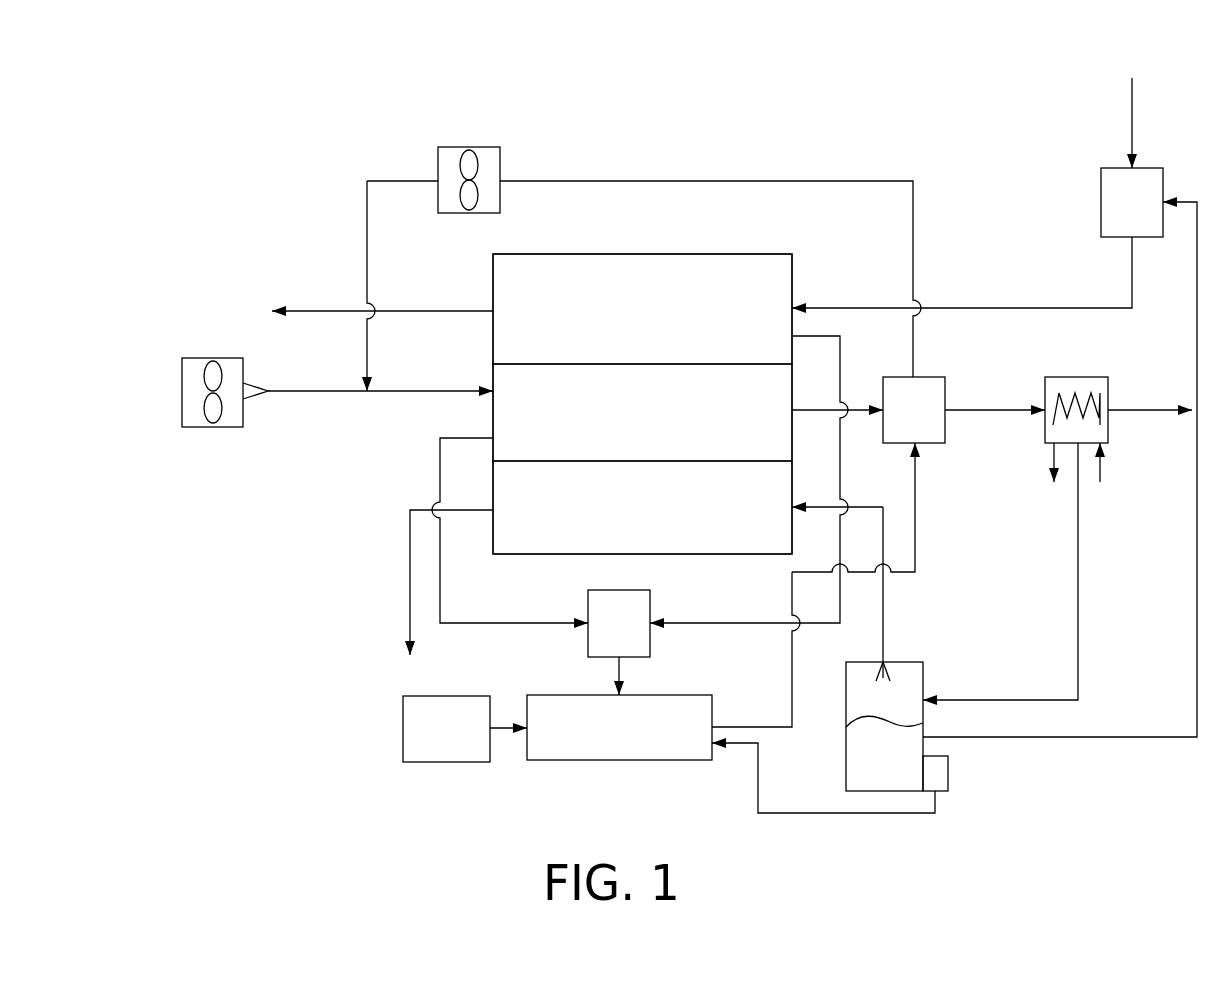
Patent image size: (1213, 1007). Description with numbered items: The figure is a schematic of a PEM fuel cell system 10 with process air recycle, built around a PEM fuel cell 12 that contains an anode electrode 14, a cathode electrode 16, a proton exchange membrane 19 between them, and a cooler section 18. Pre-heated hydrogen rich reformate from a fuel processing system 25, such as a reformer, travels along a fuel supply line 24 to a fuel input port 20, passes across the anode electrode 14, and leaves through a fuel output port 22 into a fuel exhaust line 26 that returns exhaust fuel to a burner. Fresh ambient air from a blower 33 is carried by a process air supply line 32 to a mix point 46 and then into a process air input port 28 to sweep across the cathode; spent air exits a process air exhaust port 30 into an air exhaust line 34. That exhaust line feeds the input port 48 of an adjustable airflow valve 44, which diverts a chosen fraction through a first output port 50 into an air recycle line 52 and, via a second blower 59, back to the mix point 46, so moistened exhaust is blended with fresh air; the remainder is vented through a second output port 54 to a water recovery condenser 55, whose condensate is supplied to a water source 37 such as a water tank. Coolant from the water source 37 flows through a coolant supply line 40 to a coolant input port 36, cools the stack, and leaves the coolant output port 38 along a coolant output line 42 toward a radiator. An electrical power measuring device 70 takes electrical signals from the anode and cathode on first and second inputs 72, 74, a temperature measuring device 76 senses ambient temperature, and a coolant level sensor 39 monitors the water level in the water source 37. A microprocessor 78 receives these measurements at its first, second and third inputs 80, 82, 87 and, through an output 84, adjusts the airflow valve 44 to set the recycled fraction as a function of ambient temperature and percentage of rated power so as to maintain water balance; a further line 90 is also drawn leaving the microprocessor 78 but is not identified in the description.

The PEM fuel cell system 10 is at (767, 118).
The PEM fuel cell 12 is at (706, 247).
The anode electrode 14 is at (545, 302).
The cathode electrode 16 is at (547, 427).
The cooler section 18 is at (547, 521).
The proton exchange membrane 19 is at (528, 365).
The fuel input port 20 is at (792, 305).
The fuel output port 22 is at (493, 310).
The fuel supply line 24 is at (940, 307).
The fuel processing system 25 is at (1101, 207).
The fuel exhaust line 26 is at (338, 311).
The process air input port 28 is at (493, 432).
The process air exhaust port 30 is at (796, 410).
The process air supply line 32 is at (443, 390).
The blower 33 is at (222, 358).
The air exhaust line 34 is at (816, 412).
The coolant input port 36 is at (795, 512).
The water source 37 is at (862, 768).
The coolant output port 38 is at (493, 511).
The coolant level sensor 39 is at (940, 773).
The coolant supply line 40 is at (883, 608).
The coolant output line 42 is at (410, 600).
The adjustable airflow valve 44 is at (940, 377).
The mix point 46 is at (365, 390).
The input port 48 is at (878, 405).
The first output port 50 is at (913, 377).
The air recycle line 52 is at (838, 181).
The second output port 54 is at (950, 408).
The water recovery condenser 55 is at (1062, 377).
The blower 59 is at (470, 147).
The electrical power measuring device 70 is at (632, 590).
The first input 72 is at (652, 628).
The second input 74 is at (585, 622).
The temperature measuring device 76 is at (458, 696).
The microprocessor 78 is at (663, 695).
The first input 80 is at (616, 695).
The second input 82 is at (526, 724).
The output 84 is at (915, 553).
The third input 87 is at (712, 745).
The sensor line 90 is at (713, 725).